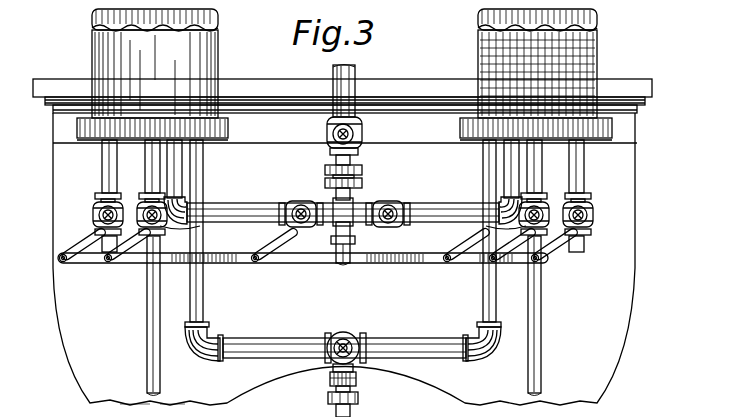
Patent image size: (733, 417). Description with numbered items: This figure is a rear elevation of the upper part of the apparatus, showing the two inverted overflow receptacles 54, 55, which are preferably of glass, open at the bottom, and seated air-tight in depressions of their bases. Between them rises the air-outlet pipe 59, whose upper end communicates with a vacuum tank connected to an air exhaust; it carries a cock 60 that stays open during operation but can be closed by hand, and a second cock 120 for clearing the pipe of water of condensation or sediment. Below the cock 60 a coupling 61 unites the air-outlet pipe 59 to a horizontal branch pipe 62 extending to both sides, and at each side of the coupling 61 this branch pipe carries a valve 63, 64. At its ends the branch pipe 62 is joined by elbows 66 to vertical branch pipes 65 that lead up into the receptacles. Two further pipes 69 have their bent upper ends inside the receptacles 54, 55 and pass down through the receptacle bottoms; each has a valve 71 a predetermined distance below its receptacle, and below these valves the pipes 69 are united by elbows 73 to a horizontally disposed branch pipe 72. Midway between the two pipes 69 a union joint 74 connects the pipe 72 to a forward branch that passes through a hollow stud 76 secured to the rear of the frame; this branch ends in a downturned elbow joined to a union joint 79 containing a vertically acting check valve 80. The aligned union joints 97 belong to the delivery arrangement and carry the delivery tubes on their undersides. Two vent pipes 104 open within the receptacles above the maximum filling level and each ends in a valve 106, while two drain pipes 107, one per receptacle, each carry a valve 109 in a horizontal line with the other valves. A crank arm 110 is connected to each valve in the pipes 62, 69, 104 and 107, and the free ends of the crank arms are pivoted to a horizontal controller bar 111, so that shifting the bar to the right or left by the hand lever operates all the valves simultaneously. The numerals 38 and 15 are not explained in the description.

The inverted overflow receptacle 55 is at (101, 50).
The inverted overflow receptacle 54 is at (580, 58).
The air-outlet pipe 59 is at (354, 79).
The cock 60 is at (357, 133).
The coupling 61 is at (360, 205).
The horizontal branch pipe 62 is at (262, 206).
The valve 63 is at (396, 204).
The valve 64 is at (293, 204).
The vertical branch pipe 65 is at (183, 162).
The elbow 66 is at (200, 194).
The pipe 69 is at (203, 291).
The valve 71 is at (200, 230).
The horizontally disposed branch pipe 72 is at (280, 338).
The elbow 73 is at (205, 347).
The union joint 74 is at (353, 345).
The hollow stud 76 is at (341, 333).
The union joint 79 is at (329, 391).
The check valve 80 is at (362, 391).
The union joint 97 is at (150, 158).
The vent pipe 104 is at (110, 154).
The valve 106 is at (93, 213).
The drain pipe 107 is at (148, 330).
The valve 109 is at (182, 232).
The crank arm 110 is at (108, 256).
The controller bar 111 is at (298, 264).
The cock 120 is at (356, 240).
The base 38 is at (135, 409).
The floor 15 is at (172, 409).